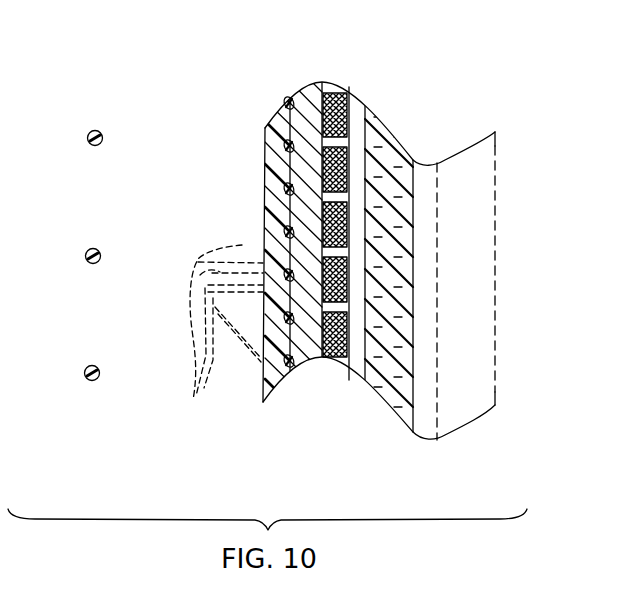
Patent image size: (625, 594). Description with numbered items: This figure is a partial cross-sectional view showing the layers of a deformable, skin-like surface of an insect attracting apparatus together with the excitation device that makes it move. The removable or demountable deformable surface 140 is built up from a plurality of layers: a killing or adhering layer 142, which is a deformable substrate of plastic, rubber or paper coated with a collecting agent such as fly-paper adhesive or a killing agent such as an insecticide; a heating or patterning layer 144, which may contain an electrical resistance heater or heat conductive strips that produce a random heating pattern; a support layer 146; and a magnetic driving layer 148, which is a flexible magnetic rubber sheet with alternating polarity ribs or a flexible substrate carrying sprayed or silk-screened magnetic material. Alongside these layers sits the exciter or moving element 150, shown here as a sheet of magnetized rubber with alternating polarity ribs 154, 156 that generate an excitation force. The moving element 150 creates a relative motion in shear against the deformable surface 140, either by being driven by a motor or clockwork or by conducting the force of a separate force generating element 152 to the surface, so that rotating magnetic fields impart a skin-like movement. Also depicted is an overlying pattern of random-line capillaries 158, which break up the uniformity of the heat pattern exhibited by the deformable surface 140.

The deformable surface 140 is at (308, 258).
The killing or adhering layer 142 is at (282, 121).
The heating or patterning layer 144 is at (289, 97).
The support layer 146 is at (308, 90).
The magnetic driving layer 148 is at (335, 90).
The moving element 150 is at (413, 453).
The force generating element 152 is at (482, 167).
The alternating polarity rib 154 is at (403, 150).
The alternating polarity rib 156 is at (404, 152).
The capillaries 158 is at (84, 368).